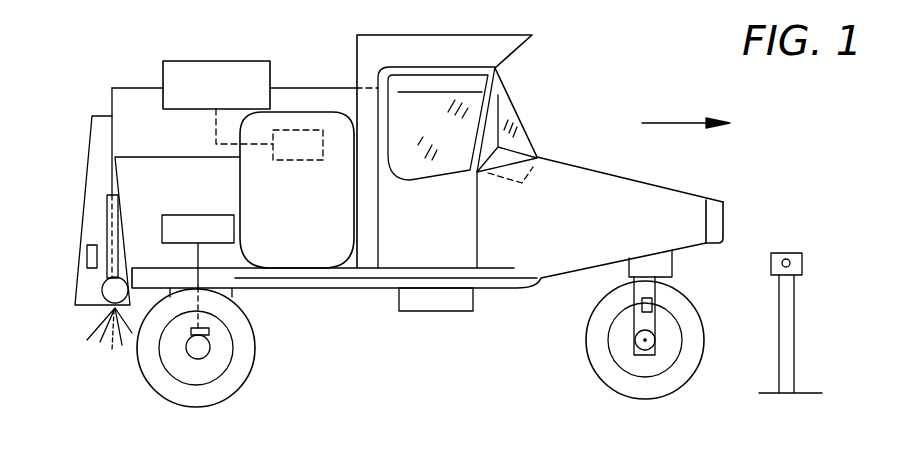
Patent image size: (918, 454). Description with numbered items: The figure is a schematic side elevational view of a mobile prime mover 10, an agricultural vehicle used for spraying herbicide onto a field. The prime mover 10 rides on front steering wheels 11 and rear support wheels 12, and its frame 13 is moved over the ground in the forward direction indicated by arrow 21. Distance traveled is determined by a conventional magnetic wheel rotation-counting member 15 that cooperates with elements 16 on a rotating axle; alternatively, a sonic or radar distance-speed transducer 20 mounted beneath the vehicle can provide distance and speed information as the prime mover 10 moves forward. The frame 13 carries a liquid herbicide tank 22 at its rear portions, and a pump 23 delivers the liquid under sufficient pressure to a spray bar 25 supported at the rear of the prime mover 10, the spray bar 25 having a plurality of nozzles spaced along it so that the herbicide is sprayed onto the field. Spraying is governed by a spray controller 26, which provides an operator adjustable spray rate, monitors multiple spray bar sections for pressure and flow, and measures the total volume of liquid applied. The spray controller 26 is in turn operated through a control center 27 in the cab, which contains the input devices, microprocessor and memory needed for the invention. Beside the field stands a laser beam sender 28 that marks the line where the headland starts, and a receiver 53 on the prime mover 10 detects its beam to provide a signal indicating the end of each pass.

The mobile prime mover 10 is at (754, 162).
The front steering wheels 11 is at (590, 336).
The rear support wheels 12 is at (247, 373).
The frame 13 is at (688, 235).
The magnetic wheel rotation-counting member 15 is at (201, 215).
The elements on rotating axle 16 is at (209, 332).
The sonic or radar distance-speed transducer 20 is at (473, 300).
The arrow indicating forward direction 21 is at (691, 88).
The liquid herbicide tank 22 is at (312, 218).
The pump 23 is at (288, 160).
The spray bar 25 is at (95, 310).
The spray controller 26 is at (238, 61).
The control center 27 is at (517, 148).
The laser beam sender 28 is at (771, 270).
The receiver 53 is at (87, 257).